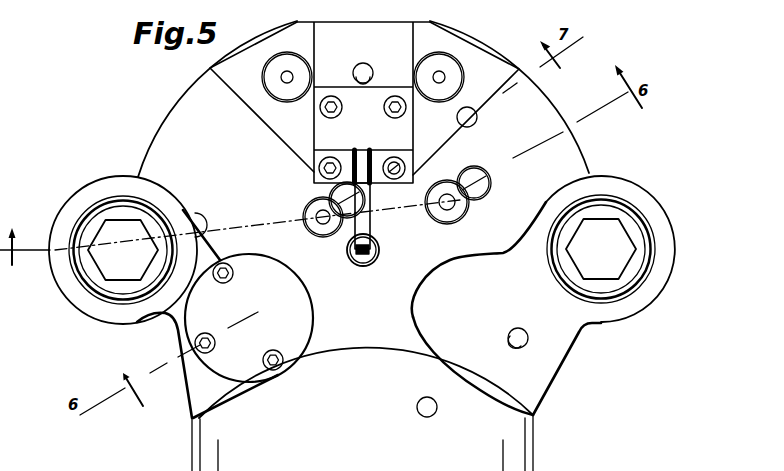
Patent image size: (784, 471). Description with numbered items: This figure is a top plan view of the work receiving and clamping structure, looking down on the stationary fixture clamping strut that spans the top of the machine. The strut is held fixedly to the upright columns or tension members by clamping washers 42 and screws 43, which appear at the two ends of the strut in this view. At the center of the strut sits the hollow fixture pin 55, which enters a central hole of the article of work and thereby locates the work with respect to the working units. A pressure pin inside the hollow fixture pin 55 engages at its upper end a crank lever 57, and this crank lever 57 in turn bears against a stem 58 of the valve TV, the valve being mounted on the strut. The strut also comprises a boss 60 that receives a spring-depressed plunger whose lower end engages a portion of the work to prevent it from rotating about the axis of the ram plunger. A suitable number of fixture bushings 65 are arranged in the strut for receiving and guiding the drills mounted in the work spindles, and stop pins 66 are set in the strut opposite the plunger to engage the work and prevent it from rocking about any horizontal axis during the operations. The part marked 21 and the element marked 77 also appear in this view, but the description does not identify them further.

The disc body 21 is at (577, 144).
The clamping washers 42 is at (96, 283).
The screws 43 is at (102, 257).
The hollow fixture pin 55 is at (380, 250).
The crank lever 57 is at (371, 220).
The stem 58 is at (364, 153).
The boss 60 is at (300, 343).
The fixture bushings 65 is at (311, 211).
The stop pins 66 is at (478, 116).
The head block 77 is at (400, 38).